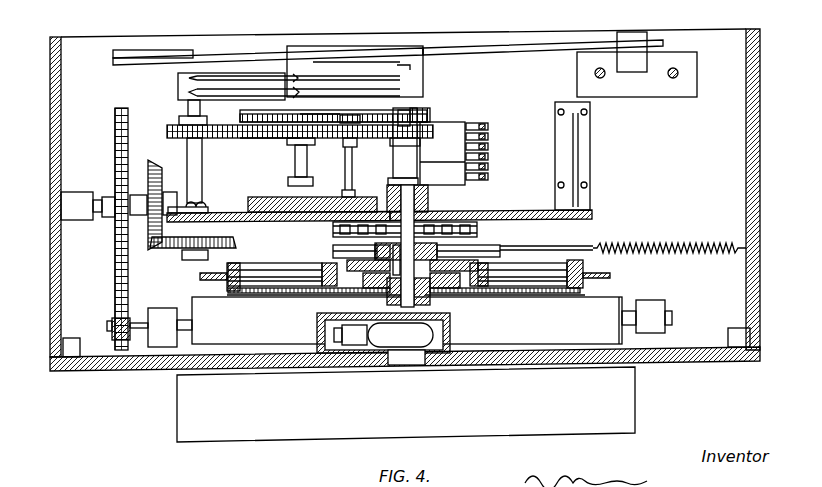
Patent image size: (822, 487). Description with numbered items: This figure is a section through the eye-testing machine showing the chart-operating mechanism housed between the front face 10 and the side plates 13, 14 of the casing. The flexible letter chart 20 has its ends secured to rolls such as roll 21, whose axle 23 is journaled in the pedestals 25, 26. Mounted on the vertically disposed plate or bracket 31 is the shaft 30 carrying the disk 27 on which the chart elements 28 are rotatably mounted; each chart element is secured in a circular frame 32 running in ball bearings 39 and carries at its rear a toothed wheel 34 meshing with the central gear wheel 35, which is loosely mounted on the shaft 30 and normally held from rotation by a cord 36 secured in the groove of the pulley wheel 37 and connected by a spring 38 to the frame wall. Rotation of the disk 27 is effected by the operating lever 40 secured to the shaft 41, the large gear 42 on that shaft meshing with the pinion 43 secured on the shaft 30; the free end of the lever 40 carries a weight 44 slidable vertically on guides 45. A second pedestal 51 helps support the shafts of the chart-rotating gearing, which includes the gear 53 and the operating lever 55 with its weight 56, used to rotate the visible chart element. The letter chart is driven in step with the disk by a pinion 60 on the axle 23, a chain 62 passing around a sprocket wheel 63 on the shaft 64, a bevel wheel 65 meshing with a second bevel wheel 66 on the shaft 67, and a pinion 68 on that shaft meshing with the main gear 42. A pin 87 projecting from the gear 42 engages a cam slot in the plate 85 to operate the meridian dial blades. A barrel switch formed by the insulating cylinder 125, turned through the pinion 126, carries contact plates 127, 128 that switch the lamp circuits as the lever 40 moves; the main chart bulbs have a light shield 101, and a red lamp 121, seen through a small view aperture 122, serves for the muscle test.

The front face 10 is at (128, 373).
The side plate 13 is at (55, 107).
The side plate 14 is at (762, 46).
The letter chart 20 is at (562, 347).
The roll 21 is at (630, 305).
The axle 23 is at (673, 316).
The pedestal 25 is at (164, 337).
The pedestal 26 is at (660, 305).
The disk 27 is at (195, 262).
The chart element 28 is at (279, 292).
The shaft 30 is at (420, 153).
The plate or bracket 31 is at (510, 217).
The circular frame 32 is at (200, 283).
The toothed wheel 34 is at (281, 264).
The central gear wheel 35 is at (460, 270).
The cord 36 is at (583, 243).
The pulley wheel 37 is at (422, 245).
The spring 38 is at (663, 242).
The ball bearing 39 is at (228, 270).
The operating lever 40 is at (520, 44).
The shaft 41 is at (292, 160).
The large gear 42 is at (252, 138).
The pinion 43 is at (420, 108).
The weight 44 is at (688, 86).
The guides 45 is at (672, 80).
The pedestal 51 is at (418, 79).
The gear 53 is at (332, 229).
The operating lever 55 is at (243, 58).
The weight 56 is at (165, 50).
The pinion 60 is at (113, 333).
The chain 62 is at (116, 277).
The sprocket wheel 63 is at (117, 136).
The shaft 64 is at (98, 216).
The bevel wheel 65 is at (168, 249).
The bevel wheel 66 is at (219, 216).
The shaft 67 is at (190, 108).
The pinion 68 is at (168, 128).
The plate 85 is at (229, 222).
The pin 87 is at (353, 178).
The light shield 101 is at (257, 432).
The lamp 121 is at (383, 340).
The view aperture 122 is at (408, 362).
The cylinder 125 is at (472, 123).
The pinion 126 is at (430, 112).
The contact plate 127 is at (320, 110).
The contact plate 128 is at (242, 113).